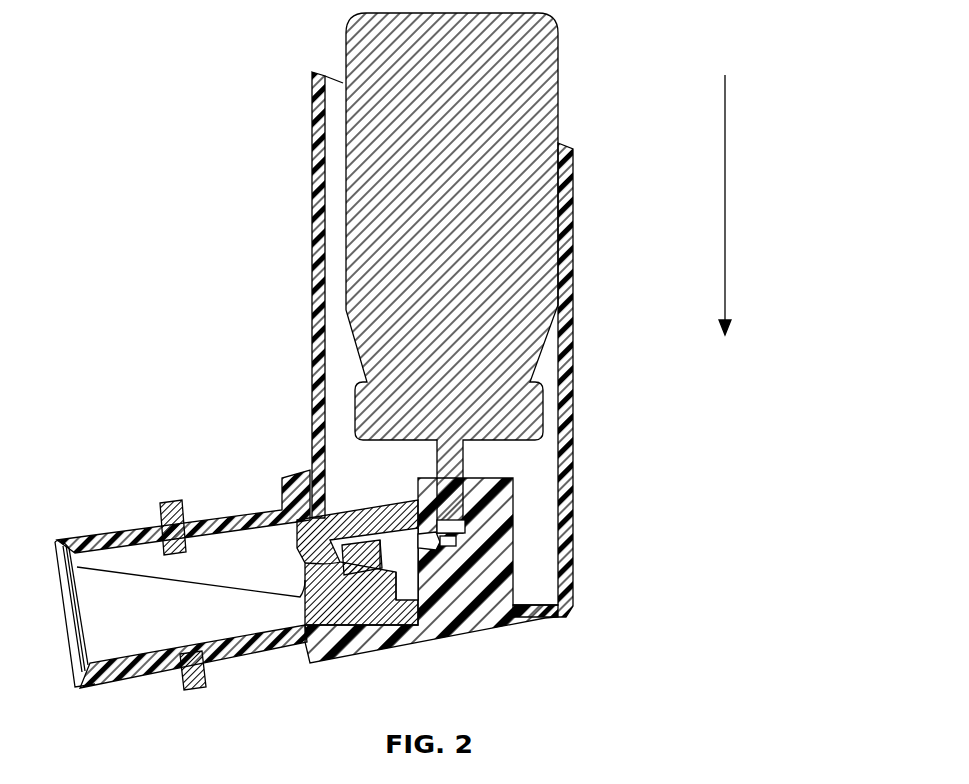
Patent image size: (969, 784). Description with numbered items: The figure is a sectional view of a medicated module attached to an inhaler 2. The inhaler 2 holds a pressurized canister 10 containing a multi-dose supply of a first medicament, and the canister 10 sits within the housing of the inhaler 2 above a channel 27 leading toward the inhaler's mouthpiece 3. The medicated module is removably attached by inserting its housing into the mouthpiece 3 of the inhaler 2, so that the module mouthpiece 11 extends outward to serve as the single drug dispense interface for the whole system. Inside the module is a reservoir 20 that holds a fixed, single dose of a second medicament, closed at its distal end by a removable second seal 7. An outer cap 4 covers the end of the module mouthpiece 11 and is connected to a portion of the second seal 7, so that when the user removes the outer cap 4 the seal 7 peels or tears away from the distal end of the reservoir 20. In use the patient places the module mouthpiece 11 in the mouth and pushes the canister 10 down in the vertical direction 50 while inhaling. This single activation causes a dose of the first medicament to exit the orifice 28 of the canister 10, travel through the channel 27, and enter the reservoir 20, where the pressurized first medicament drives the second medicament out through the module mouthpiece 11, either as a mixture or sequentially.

The inhaler 2 is at (574, 325).
The mouthpiece 3 is at (180, 573).
The outer cap 4 is at (62, 538).
The second seal 7 is at (227, 590).
The canister 10 is at (466, 190).
The module mouthpiece 11 is at (109, 537).
The reservoir 20 is at (362, 623).
The channel 27 is at (470, 542).
The orifice 28 is at (450, 515).
The vertical direction 50 is at (726, 206).